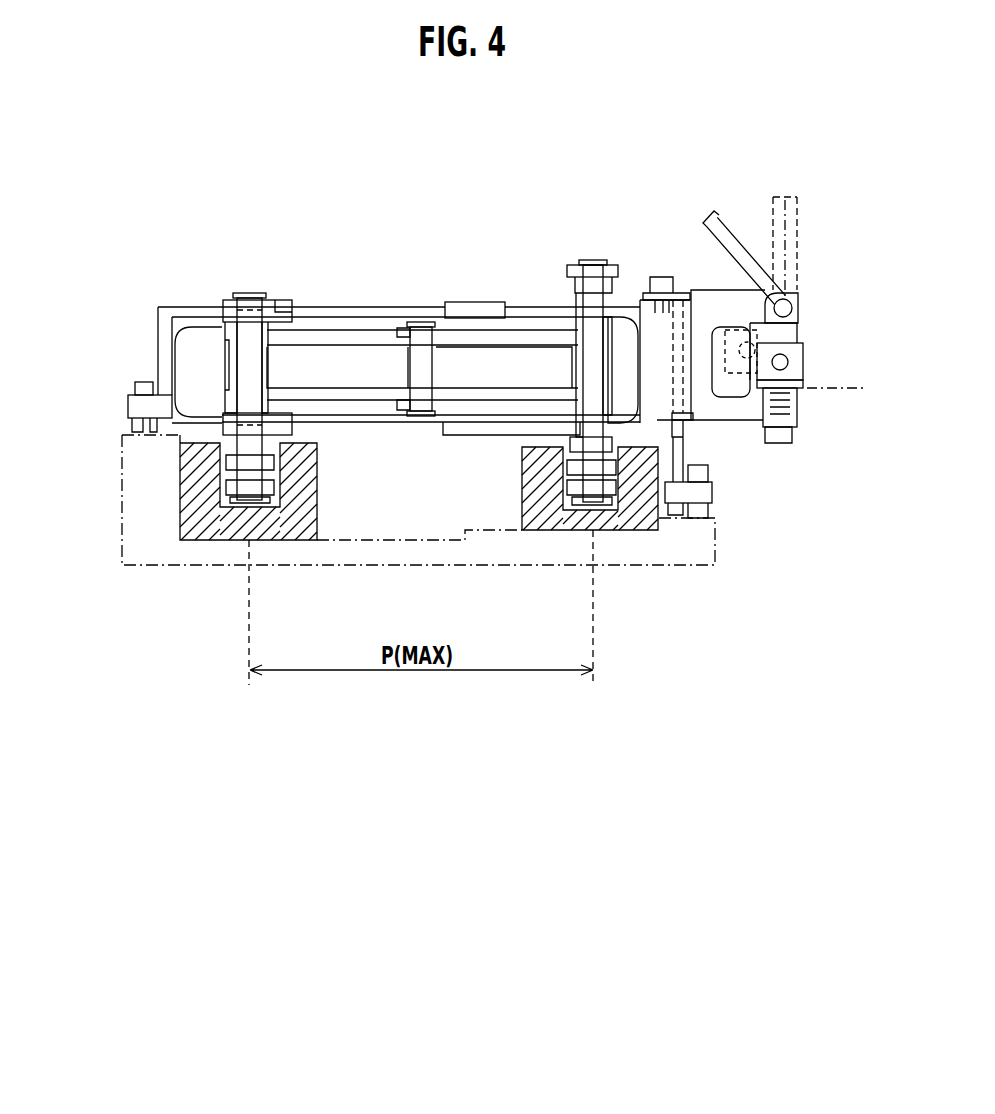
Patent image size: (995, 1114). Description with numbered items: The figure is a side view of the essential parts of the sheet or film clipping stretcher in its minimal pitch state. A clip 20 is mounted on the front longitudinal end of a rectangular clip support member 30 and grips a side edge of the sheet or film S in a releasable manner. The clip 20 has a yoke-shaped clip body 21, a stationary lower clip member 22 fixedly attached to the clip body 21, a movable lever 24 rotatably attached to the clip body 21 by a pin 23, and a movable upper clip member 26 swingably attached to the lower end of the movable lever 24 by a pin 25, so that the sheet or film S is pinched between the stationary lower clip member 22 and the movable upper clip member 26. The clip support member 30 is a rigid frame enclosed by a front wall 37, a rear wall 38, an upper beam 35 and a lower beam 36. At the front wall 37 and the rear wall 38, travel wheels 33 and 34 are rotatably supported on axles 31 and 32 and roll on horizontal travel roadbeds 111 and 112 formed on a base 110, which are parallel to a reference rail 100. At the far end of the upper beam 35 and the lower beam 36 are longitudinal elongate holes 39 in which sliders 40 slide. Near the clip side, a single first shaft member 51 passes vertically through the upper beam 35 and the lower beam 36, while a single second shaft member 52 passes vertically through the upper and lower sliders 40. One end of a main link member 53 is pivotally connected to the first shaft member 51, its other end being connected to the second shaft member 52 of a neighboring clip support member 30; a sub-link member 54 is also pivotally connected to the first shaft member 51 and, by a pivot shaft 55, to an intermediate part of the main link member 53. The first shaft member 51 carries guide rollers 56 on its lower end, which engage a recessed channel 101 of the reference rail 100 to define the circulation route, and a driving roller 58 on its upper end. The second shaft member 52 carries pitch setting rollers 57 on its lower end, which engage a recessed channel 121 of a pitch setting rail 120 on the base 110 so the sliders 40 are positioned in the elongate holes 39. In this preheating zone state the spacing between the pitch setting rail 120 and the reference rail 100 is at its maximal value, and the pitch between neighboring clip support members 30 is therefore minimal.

The clip 20 is at (843, 272).
The clip body 21 is at (712, 295).
The stationary lower clip member 22 is at (797, 405).
The pin 23 is at (800, 310).
The movable lever 24 is at (797, 335).
The pin 25 is at (798, 360).
The movable upper clip member 26 is at (803, 383).
The clip support member 30 is at (524, 300).
The axle 31 is at (712, 490).
The axle 32 is at (140, 406).
The travel wheel 33 is at (705, 471).
The travel wheel 34 is at (140, 388).
The upper beam 35 is at (456, 304).
The lower beam 36 is at (462, 432).
The front wall 37 is at (682, 423).
The rear wall 38 is at (170, 330).
The elongate hole 39 is at (322, 306).
The slider 40 is at (270, 305).
The first shaft member 51 is at (593, 275).
The second shaft member 52 is at (248, 318).
The main link member 53 is at (373, 330).
The sub-link member 54 is at (490, 340).
The pivot shaft 55 is at (418, 405).
The guide roller 56 is at (578, 488).
The pitch setting roller 57 is at (262, 500).
The driving roller 58 is at (618, 278).
The reference rail 100 is at (555, 522).
The recessed channel 101 is at (612, 508).
The base 110 is at (720, 553).
The travel roadbed 111 is at (708, 508).
The travel roadbed 112 is at (125, 440).
The pitch setting rail 120 is at (210, 520).
The recessed channel 121 is at (278, 505).
The sheet or film S is at (838, 392).